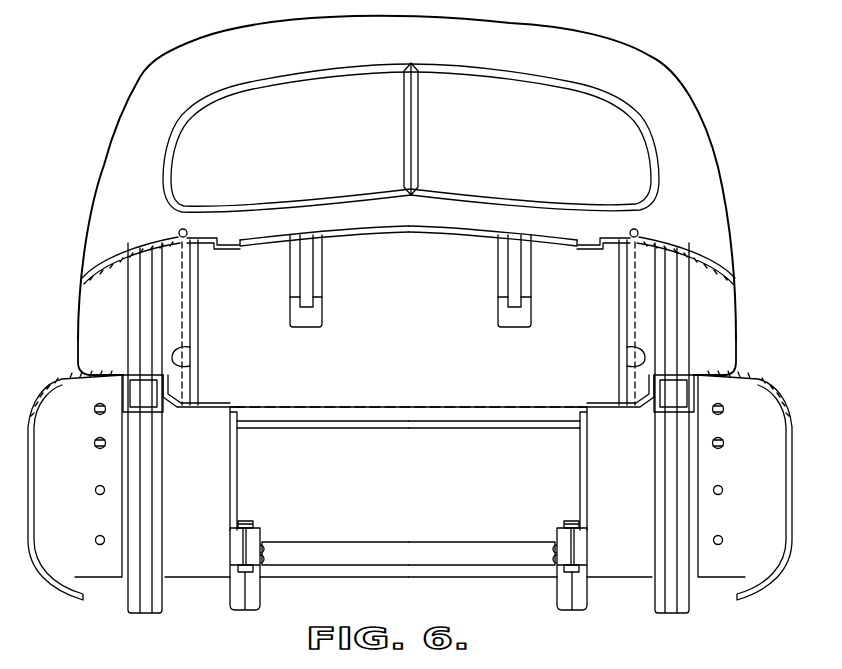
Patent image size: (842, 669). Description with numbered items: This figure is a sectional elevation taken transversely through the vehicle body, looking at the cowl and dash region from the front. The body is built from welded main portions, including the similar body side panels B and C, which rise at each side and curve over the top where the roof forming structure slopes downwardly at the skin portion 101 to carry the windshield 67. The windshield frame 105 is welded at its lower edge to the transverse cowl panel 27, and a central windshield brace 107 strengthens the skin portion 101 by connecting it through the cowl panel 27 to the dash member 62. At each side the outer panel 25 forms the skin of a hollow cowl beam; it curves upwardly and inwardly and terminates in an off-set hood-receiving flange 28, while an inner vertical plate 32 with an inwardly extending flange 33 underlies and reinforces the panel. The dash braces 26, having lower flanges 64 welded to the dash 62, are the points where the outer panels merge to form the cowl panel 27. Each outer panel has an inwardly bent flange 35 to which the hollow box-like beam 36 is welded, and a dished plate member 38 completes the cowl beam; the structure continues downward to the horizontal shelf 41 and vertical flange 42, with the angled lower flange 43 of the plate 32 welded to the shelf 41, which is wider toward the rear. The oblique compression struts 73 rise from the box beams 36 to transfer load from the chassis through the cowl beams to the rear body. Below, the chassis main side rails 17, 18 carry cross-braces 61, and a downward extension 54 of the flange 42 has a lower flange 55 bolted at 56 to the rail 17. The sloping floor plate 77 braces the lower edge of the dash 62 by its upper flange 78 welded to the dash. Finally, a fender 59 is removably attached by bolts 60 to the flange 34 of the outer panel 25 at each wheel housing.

The skin portion of roof forming structure 101 is at (270, 37).
The body side panel B is at (100, 180).
The body side panel C is at (712, 166).
The windshield 67 is at (614, 124).
The windshield frame 105 is at (654, 147).
The central windshield brace 107 is at (424, 129).
The outer panel 25 is at (88, 272).
The inwardly extending flange 33 is at (210, 246).
The hood-receiving flange 28 is at (230, 247).
The transverse cowl panel 27 is at (462, 222).
The oblique compression strut 73 is at (137, 302).
The hollow box-like beam 36 is at (130, 413).
The inwardly bent flange 35 is at (120, 390).
The inner vertical plate 32 is at (198, 315).
The dished plate member 38 is at (200, 346).
The angled lower flange 43 is at (203, 405).
The horizontal shelf 41 is at (222, 406).
The vertical flange 42 is at (243, 417).
The downward extension 54 is at (235, 472).
The dash member 62 is at (450, 395).
The upper flange 78 is at (410, 378).
The dash brace 26 is at (325, 288).
The lower flange 64 is at (317, 318).
The cross-brace 61 is at (405, 520).
The floor plate 77 is at (480, 527).
The main side rail 17 is at (227, 546).
The main side rail 18 is at (588, 549).
The bolt 56 is at (248, 522).
The lower flange 55 is at (287, 509).
The fender 59 is at (58, 383).
The bolts 60 is at (97, 534).
The flange 34 is at (95, 371).